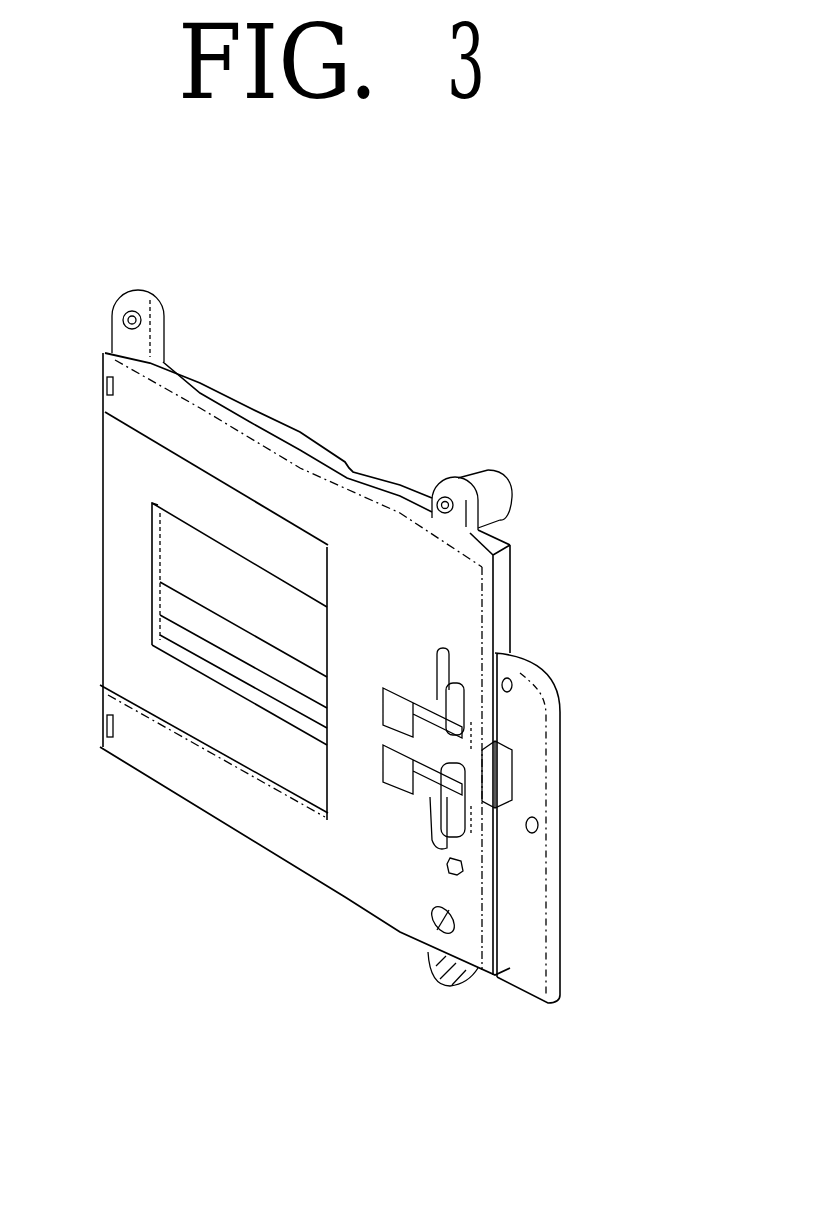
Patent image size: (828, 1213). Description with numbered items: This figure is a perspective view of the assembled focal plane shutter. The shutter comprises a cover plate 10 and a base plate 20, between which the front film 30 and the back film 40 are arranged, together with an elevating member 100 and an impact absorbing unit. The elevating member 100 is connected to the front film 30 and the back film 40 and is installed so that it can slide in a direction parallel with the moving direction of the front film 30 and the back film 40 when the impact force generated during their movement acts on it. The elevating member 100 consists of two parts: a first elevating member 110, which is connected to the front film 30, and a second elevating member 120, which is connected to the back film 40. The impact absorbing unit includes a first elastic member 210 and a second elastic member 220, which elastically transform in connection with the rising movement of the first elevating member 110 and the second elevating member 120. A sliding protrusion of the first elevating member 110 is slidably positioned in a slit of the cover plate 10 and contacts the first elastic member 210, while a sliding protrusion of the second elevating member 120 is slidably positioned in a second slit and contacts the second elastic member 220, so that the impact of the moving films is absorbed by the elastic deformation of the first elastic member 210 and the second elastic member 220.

The cover plate 10 is at (402, 907).
The base plate 20 is at (521, 965).
The front film 30 is at (172, 628).
The back film 40 is at (173, 548).
The elevating member 100 is at (567, 764).
The first elevating member 110 is at (400, 776).
The second elevating member 120 is at (440, 706).
The first elastic member 210 is at (400, 776).
The second elastic member 220 is at (440, 706).